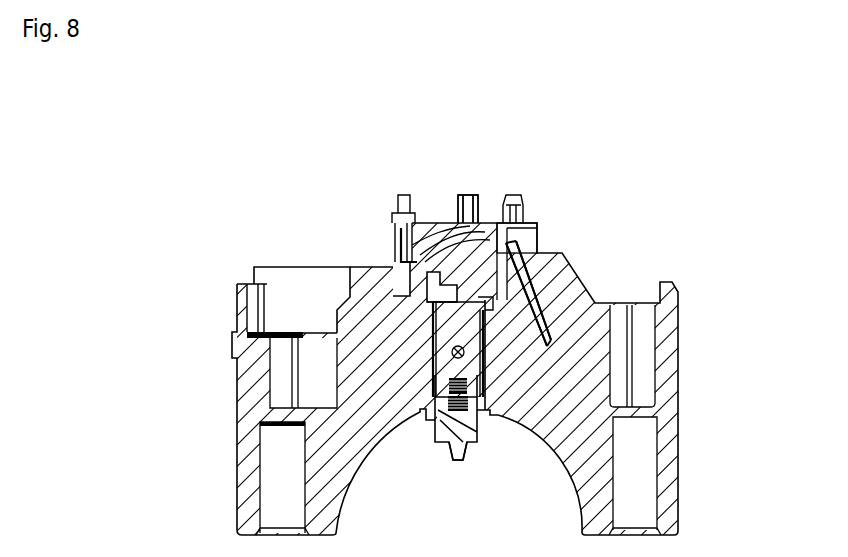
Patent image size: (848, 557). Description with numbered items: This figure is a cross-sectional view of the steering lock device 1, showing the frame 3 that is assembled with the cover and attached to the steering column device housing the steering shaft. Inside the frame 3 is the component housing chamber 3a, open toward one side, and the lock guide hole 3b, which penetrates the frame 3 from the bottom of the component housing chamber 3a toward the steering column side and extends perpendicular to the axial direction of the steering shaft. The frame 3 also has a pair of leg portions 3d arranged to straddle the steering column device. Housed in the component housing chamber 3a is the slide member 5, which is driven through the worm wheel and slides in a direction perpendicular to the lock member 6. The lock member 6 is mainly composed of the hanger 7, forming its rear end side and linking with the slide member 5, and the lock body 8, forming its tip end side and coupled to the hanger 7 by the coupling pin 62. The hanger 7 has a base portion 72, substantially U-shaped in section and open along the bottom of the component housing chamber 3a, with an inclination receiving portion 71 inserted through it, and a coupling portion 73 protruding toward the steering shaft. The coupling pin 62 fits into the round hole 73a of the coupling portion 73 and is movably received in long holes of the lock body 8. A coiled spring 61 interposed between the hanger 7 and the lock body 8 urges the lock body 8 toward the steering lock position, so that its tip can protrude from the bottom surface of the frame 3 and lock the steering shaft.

The steering lock device 1 is at (202, 239).
The frame 3 is at (679, 422).
The component housing chamber 3a is at (313, 251).
The lock guide hole 3b is at (483, 250).
The leg portion 3d is at (247, 498).
The slide member 5 is at (443, 262).
The lock member 6 is at (443, 444).
The hanger 7 is at (583, 293).
The lock body 8 is at (467, 450).
The coiled spring 61 is at (466, 416).
The coupling pin 62 is at (486, 353).
The inclination receiving portion 71 is at (453, 248).
The base portion 72 is at (454, 173).
The coupling portion 73 is at (560, 254).
The round hole 73a is at (433, 347).